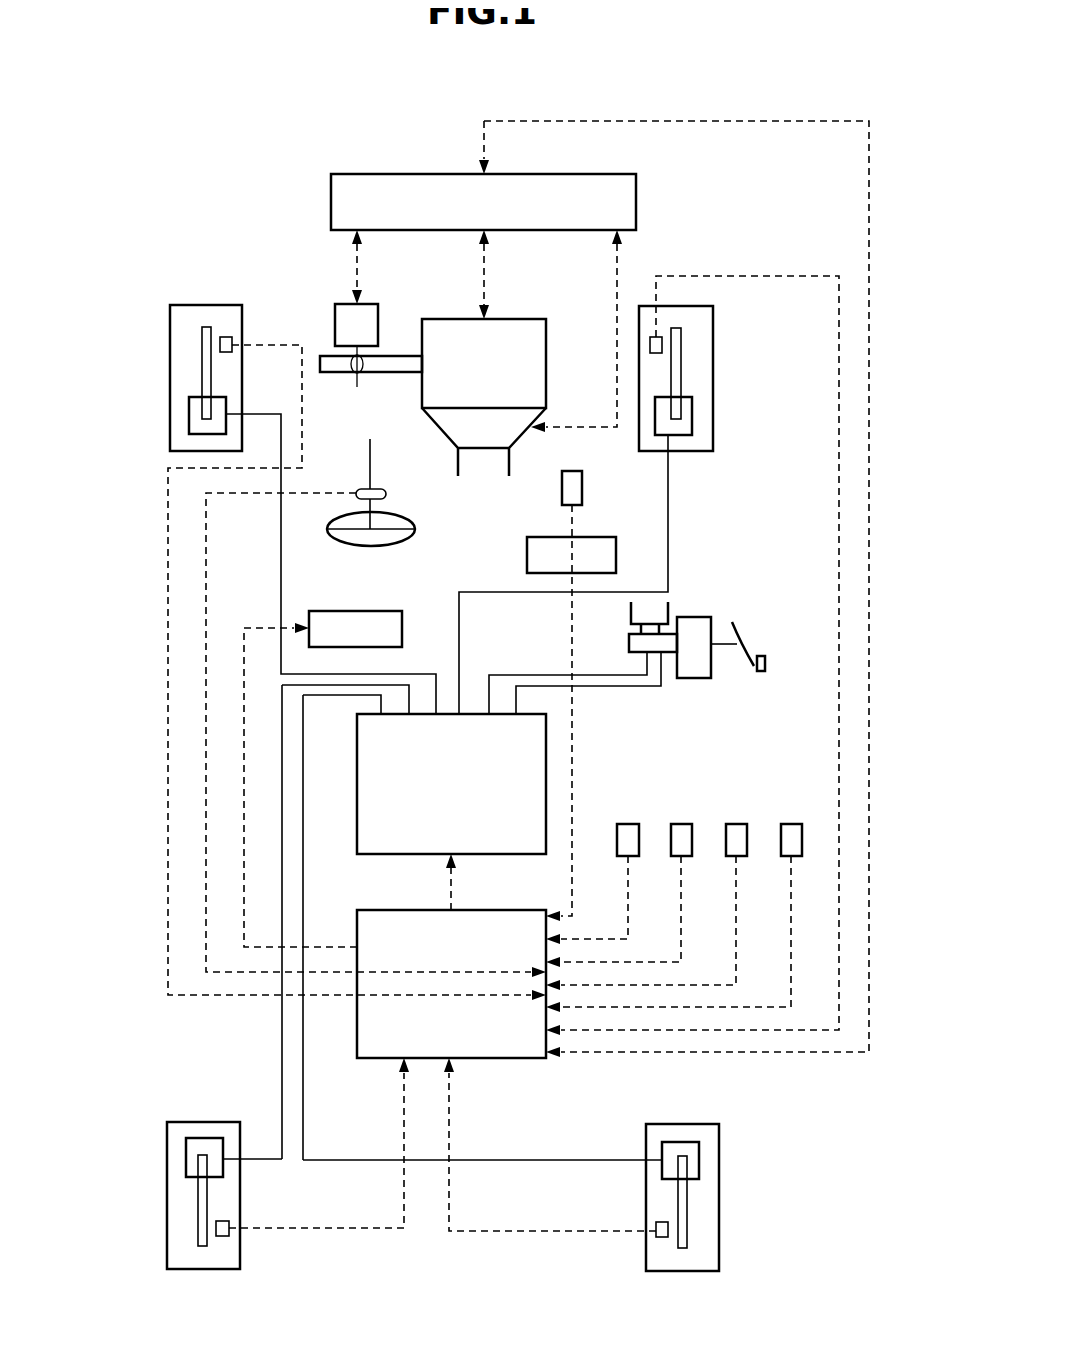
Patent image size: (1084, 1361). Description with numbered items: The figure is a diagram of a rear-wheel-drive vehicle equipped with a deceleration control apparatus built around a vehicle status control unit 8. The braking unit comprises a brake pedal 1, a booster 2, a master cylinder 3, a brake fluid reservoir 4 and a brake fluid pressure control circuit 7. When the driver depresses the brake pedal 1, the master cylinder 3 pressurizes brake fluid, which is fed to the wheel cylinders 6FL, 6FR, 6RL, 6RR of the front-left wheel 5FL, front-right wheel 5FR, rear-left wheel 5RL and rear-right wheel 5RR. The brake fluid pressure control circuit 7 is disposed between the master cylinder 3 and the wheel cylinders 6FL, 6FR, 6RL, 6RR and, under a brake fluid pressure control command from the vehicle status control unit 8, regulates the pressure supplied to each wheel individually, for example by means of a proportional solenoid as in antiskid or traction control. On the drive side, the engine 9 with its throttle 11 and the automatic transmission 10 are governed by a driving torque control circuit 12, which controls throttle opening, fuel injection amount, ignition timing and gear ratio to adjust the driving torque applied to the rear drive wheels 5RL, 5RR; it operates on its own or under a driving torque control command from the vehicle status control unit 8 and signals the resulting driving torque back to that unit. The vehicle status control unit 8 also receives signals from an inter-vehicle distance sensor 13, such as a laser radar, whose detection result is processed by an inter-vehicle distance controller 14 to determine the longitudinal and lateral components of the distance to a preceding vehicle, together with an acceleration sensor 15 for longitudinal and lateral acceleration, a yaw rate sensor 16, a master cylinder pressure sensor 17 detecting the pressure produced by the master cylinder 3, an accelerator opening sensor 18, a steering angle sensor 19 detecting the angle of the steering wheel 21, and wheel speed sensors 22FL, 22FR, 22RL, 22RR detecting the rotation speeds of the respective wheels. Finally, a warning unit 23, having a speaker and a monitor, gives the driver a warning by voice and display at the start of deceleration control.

The brake pedal 1 is at (766, 665).
The booster 2 is at (697, 679).
The master cylinder 3 is at (630, 641).
The brake fluid reservoir 4 is at (670, 611).
The front-left wheel 5FL is at (243, 318).
The front-right wheel 5FR is at (714, 335).
The rear-left wheel 5RL is at (205, 1123).
The rear-right wheel 5RR is at (685, 1125).
The wheel cylinder 6FL is at (190, 417).
The wheel cylinder 6FR is at (693, 425).
The wheel cylinder 6RL is at (187, 1157).
The wheel cylinder 6RR is at (700, 1160).
The brake fluid pressure control circuit 7 is at (370, 857).
The vehicle status control unit 8 is at (525, 912).
The engine 9 is at (528, 320).
The automatic transmission 10 is at (442, 431).
The throttle 11 is at (355, 378).
The driving torque control circuit 12 is at (637, 202).
The inter-vehicle distance sensor 13 is at (583, 488).
The inter-vehicle distance controller 14 is at (600, 538).
The acceleration sensor 15 is at (629, 825).
The yaw rate sensor 16 is at (682, 825).
The master cylinder pressure sensor 17 is at (737, 825).
The accelerator opening sensor 18 is at (792, 825).
The steering angle sensor 19 is at (387, 495).
The steering wheel 21 is at (416, 535).
The wheel speed sensor 22FL is at (228, 338).
The wheel speed sensor 22FR is at (651, 346).
The wheel speed sensor 22RL is at (222, 1237).
The wheel speed sensor 22RR is at (663, 1238).
The warning unit 23 is at (403, 612).